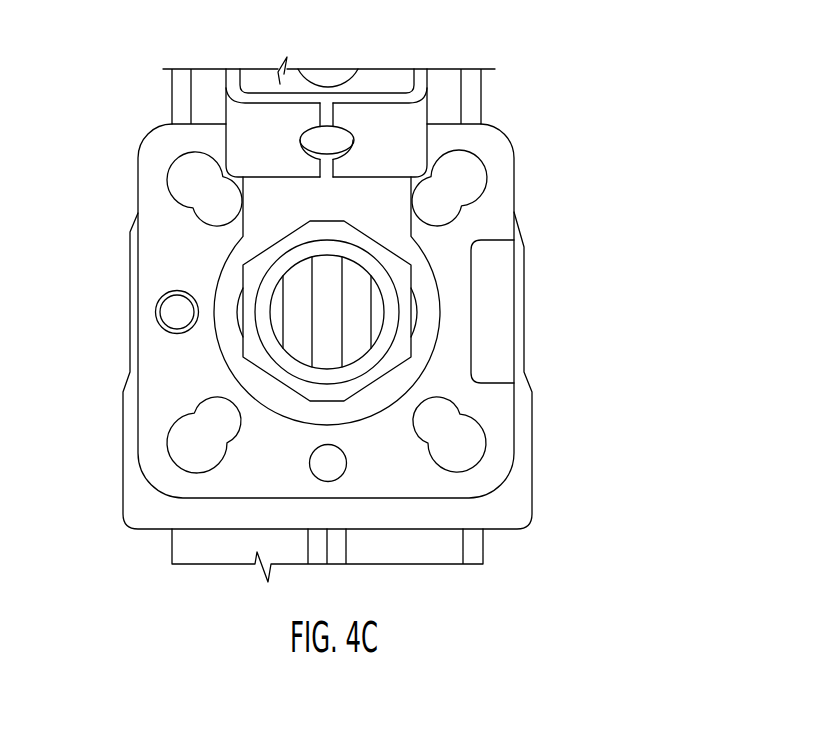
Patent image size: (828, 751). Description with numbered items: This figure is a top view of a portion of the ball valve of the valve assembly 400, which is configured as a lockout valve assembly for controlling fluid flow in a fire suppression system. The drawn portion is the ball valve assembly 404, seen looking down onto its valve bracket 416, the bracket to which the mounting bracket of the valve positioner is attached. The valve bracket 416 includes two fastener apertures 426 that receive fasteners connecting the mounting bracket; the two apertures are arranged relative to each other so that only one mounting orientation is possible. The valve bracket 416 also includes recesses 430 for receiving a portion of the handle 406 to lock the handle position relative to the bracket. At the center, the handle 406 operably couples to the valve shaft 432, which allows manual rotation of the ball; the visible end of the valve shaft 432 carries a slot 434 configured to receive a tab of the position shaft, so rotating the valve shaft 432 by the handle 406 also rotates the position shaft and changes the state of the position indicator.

The valve assembly 400 is at (650, 229).
The ball valve assembly 404 is at (490, 105).
The handle 406 is at (393, 82).
The valve bracket 416 is at (163, 227).
The fastener apertures 426 is at (173, 313).
The recesses 430 is at (476, 285).
The valve shaft 432 is at (295, 319).
The slot 434 is at (330, 319).